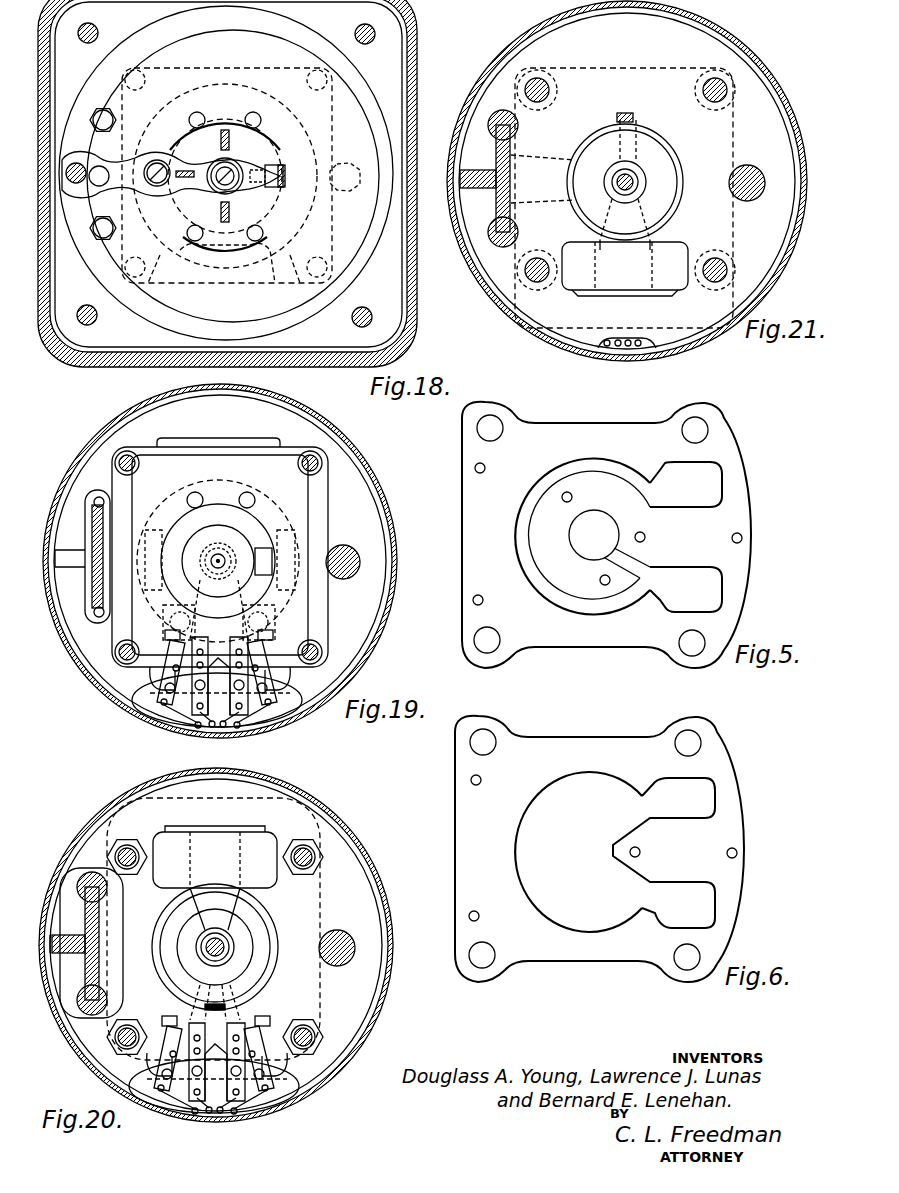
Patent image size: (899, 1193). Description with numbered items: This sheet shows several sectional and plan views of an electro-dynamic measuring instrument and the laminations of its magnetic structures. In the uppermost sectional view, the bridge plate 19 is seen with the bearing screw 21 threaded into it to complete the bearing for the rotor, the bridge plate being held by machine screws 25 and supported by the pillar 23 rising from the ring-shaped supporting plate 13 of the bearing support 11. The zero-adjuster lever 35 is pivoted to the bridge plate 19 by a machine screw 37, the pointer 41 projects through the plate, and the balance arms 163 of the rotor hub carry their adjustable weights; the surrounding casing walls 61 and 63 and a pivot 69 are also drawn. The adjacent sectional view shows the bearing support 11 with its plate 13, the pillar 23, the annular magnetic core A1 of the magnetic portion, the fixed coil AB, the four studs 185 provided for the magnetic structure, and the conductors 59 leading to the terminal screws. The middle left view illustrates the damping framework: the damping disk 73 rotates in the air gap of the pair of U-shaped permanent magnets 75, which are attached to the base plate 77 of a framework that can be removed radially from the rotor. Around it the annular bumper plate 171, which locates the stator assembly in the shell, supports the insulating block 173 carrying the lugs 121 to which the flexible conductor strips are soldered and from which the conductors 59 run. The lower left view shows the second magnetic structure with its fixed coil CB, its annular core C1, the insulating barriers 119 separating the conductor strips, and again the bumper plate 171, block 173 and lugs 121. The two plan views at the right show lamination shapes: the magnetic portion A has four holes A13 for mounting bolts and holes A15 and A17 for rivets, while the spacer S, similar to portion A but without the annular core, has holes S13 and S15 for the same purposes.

In FIG. 18, the outer casing 61 is at (412, 292).
In FIG. 18, the inner casing wall 63 is at (402, 250).
In FIG. 18, the bridge plate 19 is at (110, 255).
In FIG. 18, the base plate 77 is at (240, 237).
In FIG. 19, the base plate 77 is at (320, 624).
In FIG. 18, the machine screws 25 is at (95, 118).
In FIG. 18, the zero-adjuster lever 35 is at (78, 198).
In FIG. 18, the pivot pin 69 is at (76, 165).
In FIG. 18, the machine screw 37 is at (157, 162).
In FIG. 18, the bearing screw 21 is at (218, 168).
In FIG. 18, the balance arms 163 is at (232, 140).
In FIG. 18, the pointer 41 is at (273, 172).
In FIG. 19, the pointer 41 is at (263, 548).
In FIG. 21, the ring-shaped supporting plate 13 is at (780, 258).
In FIG. 21, the studs 185 is at (549, 90).
In FIG. 21, the pillar 23 is at (755, 170).
In FIG. 19, the pillar 23 is at (348, 550).
In FIG. 20, the pillar 23 is at (345, 940).
In FIG. 21, the annular magnetic core A1 is at (668, 157).
In FIG. 21, the fixed coil AB is at (680, 240).
In FIG. 21, the bearing support 11 is at (492, 228).
In FIG. 19, the bearing support 11 is at (88, 540).
In FIG. 20, the bearing support 11 is at (105, 975).
In FIG. 21, the conductors 59 is at (630, 350).
In FIG. 19, the conductors 59 is at (225, 735).
In FIG. 20, the conductors 59 is at (222, 1120).
In FIG. 19, the annular bumper plate 171 is at (385, 602).
In FIG. 20, the annular bumper plate 171 is at (380, 1010).
In FIG. 19, the damping disk 73 is at (210, 482).
In FIG. 19, the U-shaped permanent magnets 75 is at (165, 530).
In FIG. 19, the lugs 121 is at (165, 635).
In FIG. 20, the lugs 121 is at (255, 1030).
In FIG. 19, the insulating block 173 is at (140, 690).
In FIG. 20, the insulating block 173 is at (285, 1090).
In FIG. 20, the contact block CB is at (260, 835).
In FIG. 20, the annular magnetic core C1 is at (255, 925).
In FIG. 20, the insulating barriers 119 is at (253, 940).
In FIG. 5, the magnetic portion A is at (750, 582).
In FIG. 5, the holes A13 is at (477, 428).
In FIG. 5, the holes A15 is at (485, 466).
In FIG. 5, the holes A17 is at (572, 497).
In FIG. 6, the magnetic structure S is at (752, 820).
In FIG. 6, the holes S13 is at (470, 742).
In FIG. 6, the holes S15 is at (481, 780).